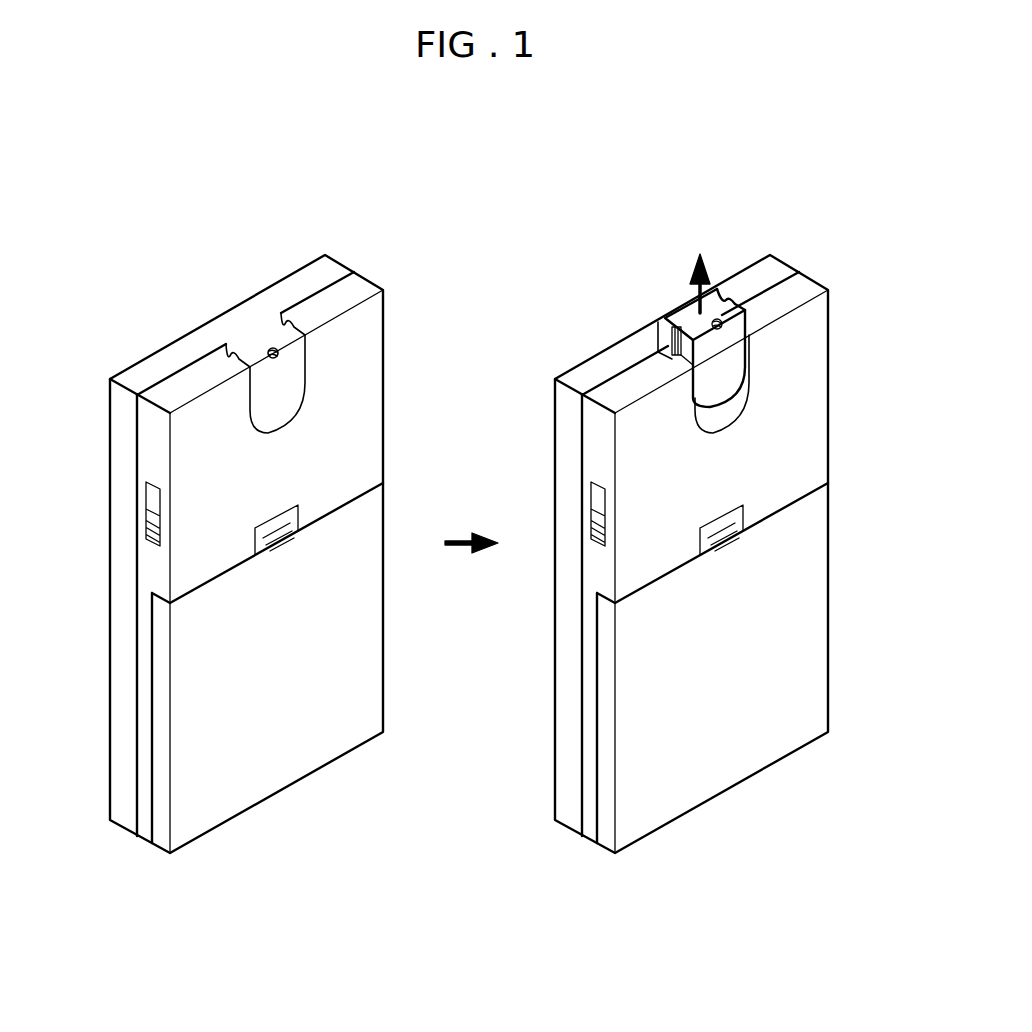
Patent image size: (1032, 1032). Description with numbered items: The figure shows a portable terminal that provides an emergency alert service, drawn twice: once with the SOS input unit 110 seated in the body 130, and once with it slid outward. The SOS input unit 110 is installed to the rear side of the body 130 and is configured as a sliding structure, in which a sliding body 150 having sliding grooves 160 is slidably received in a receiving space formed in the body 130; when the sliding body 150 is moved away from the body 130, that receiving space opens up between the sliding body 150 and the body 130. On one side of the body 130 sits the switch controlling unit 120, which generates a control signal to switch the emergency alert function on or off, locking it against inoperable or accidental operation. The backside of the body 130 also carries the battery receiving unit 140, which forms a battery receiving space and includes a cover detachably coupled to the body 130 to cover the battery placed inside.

The SOS input unit 110 is at (240, 328).
The switch controlling unit 120 is at (132, 504).
The body 130 is at (116, 437).
The battery receiving unit 140 is at (365, 610).
The sliding body 150 is at (655, 338).
The sliding grooves 160 is at (743, 393).